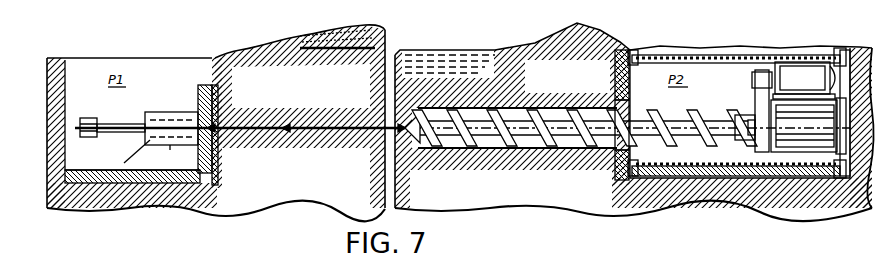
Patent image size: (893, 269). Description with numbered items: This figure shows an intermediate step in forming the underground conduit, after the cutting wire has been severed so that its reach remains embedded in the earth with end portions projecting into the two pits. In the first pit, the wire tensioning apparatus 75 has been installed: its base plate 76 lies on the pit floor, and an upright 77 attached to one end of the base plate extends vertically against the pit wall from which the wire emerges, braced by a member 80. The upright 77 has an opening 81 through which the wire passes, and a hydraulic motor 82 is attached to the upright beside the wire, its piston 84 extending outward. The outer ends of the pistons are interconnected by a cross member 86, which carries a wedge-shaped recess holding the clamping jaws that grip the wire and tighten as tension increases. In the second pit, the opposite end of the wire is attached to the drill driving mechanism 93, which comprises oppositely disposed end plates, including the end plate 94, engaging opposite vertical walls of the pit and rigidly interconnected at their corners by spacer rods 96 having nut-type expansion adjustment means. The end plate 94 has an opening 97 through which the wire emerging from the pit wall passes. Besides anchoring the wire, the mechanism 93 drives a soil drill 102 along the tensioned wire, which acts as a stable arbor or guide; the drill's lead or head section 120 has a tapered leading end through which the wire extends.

The wire tensioning apparatus 75 is at (152, 146).
The base plate 76 is at (176, 150).
The upright 77 is at (212, 160).
The bracing member 80 is at (140, 130).
The opening 81 is at (200, 118).
The hydraulic motor 82 is at (148, 112).
The piston 84 is at (109, 123).
The cross member 86 is at (87, 118).
The drill driving mechanism 93 is at (752, 107).
The end plate 94 is at (624, 88).
The spacer rod 96 is at (733, 63).
The opening 97 is at (628, 111).
The soil drill 102 is at (540, 150).
The lead or head section 120 is at (440, 150).